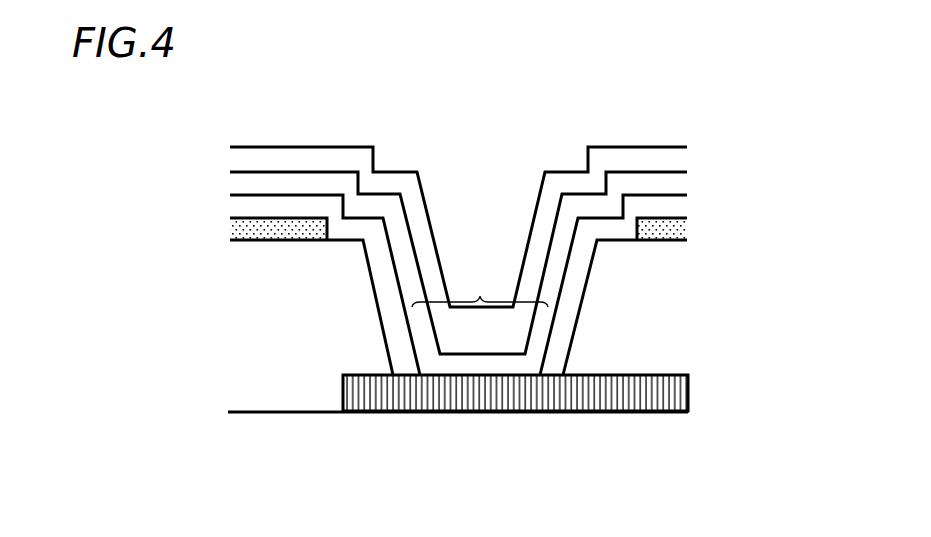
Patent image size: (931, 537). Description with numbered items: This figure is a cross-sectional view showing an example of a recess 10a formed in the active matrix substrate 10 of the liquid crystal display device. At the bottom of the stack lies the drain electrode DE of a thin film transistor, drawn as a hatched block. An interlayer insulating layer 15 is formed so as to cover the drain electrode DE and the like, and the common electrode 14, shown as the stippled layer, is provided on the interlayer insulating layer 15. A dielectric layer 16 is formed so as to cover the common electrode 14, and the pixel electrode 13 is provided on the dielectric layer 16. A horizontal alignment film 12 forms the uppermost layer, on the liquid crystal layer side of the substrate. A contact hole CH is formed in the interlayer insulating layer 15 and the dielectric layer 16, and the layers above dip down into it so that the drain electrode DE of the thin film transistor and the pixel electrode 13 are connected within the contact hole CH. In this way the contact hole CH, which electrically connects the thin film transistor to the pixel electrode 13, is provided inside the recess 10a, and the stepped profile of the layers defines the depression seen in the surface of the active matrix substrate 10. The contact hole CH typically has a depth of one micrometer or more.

The active matrix substrate 10 is at (664, 86).
The recess 10a is at (481, 185).
The horizontal alignment film 12 is at (243, 155).
The pixel electrode 13 is at (672, 185).
The common electrode 14 is at (673, 230).
The interlayer insulating layer 15 is at (277, 345).
The dielectric layer 16 is at (235, 205).
The contact hole CH is at (480, 290).
The drain electrode DE is at (522, 395).